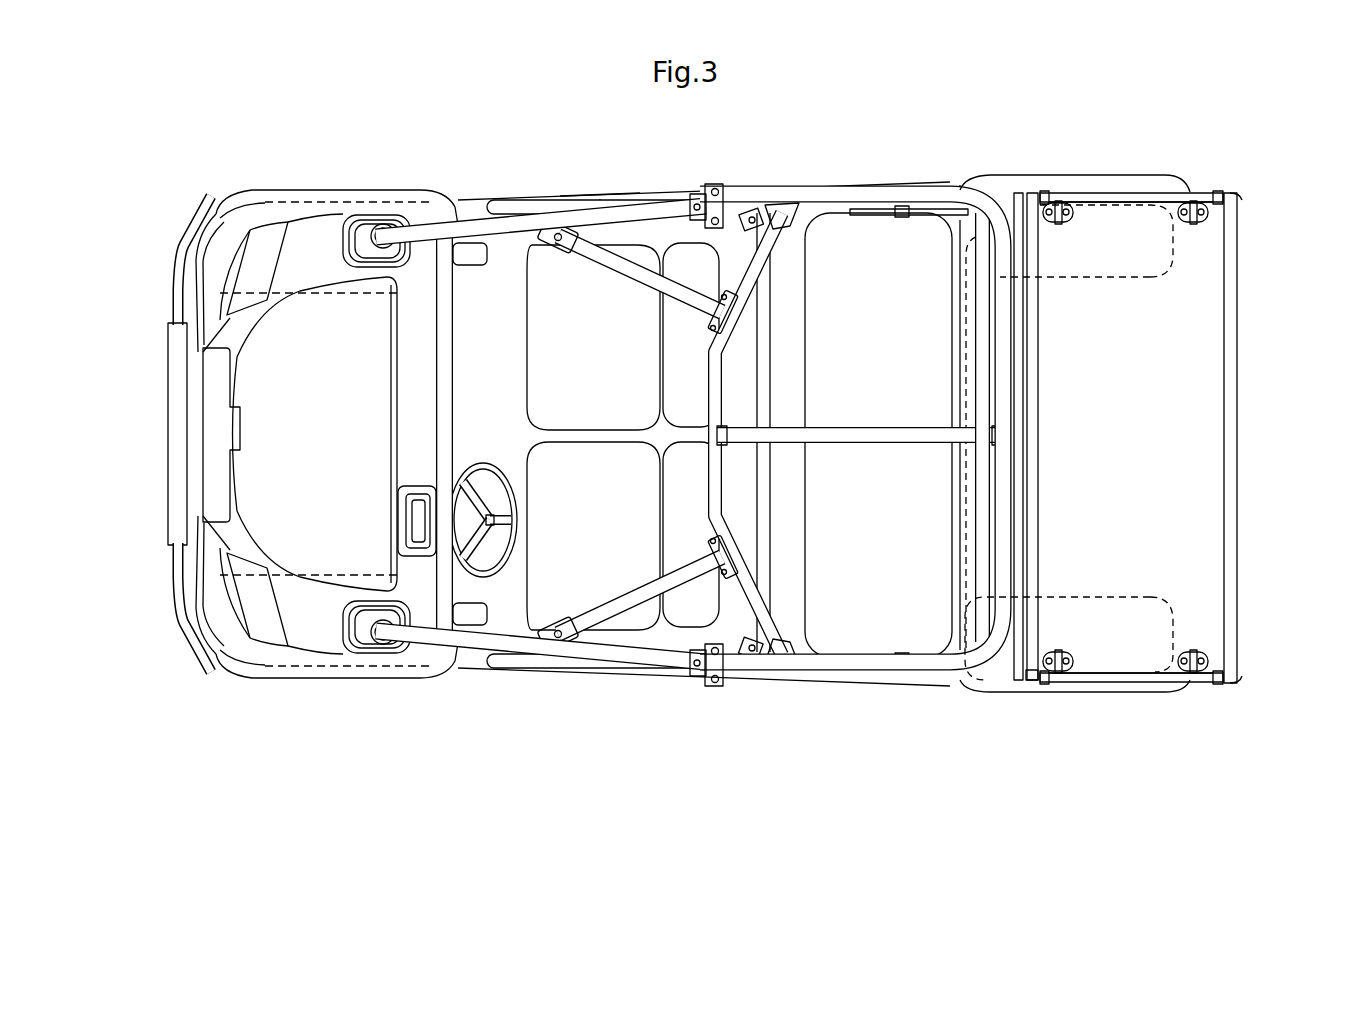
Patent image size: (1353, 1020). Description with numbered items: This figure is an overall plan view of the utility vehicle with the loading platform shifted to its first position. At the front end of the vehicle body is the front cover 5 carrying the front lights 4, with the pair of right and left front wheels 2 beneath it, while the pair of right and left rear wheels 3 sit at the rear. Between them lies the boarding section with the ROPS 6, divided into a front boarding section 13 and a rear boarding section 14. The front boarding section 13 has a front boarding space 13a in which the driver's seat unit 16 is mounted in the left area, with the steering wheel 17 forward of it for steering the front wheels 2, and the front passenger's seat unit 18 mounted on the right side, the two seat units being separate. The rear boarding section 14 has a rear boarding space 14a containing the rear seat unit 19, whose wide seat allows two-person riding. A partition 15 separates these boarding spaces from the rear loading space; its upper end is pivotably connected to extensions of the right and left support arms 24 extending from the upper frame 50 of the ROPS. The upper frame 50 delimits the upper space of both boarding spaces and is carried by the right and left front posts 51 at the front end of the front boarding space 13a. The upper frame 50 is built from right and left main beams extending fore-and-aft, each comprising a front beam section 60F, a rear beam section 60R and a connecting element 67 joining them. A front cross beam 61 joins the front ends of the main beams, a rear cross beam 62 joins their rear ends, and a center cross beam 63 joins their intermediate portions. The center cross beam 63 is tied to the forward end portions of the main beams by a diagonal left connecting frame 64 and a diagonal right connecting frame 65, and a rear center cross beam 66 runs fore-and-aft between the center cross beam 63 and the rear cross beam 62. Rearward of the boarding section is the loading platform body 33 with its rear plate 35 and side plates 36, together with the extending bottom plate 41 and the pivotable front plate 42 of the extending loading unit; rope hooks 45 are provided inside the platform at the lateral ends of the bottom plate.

The front wheels 2 is at (305, 200).
The rear wheels 3 is at (1000, 182).
The front lights 4 is at (257, 262).
The front cover 5 is at (275, 428).
The ROPS 6 is at (410, 405).
The front boarding section 13 is at (600, 202).
The front boarding space 13a is at (617, 398).
The rear boarding section 14 is at (945, 184).
The rear boarding space 14a is at (897, 398).
The partition 15 is at (966, 470).
The driver's seat unit 16 is at (545, 603).
The steering wheel 17 is at (477, 470).
The front passenger's seat unit 18 is at (540, 307).
The rear seat unit 19 is at (823, 540).
The support arms 24 is at (940, 225).
The loading platform body 33 is at (1090, 188).
The rear plate 35 is at (1238, 440).
The side plates 36 is at (1148, 200).
The extending bottom plate 41 is at (1021, 537).
The front plate 42 is at (1038, 383).
The rope hooks 45 is at (1060, 223).
The upper frame 50 is at (780, 249).
The front posts 51 is at (346, 240).
The front beam section 60F is at (507, 205).
The rear beam section 60R is at (843, 195).
The front cross beam 61 is at (447, 362).
The rear cross beam 62 is at (990, 323).
The center cross beam 63 is at (715, 368).
The left connecting frame 64 is at (613, 607).
The right connecting frame 65 is at (615, 263).
The rear center cross beam 66 is at (843, 446).
The connecting element 67 is at (702, 194).